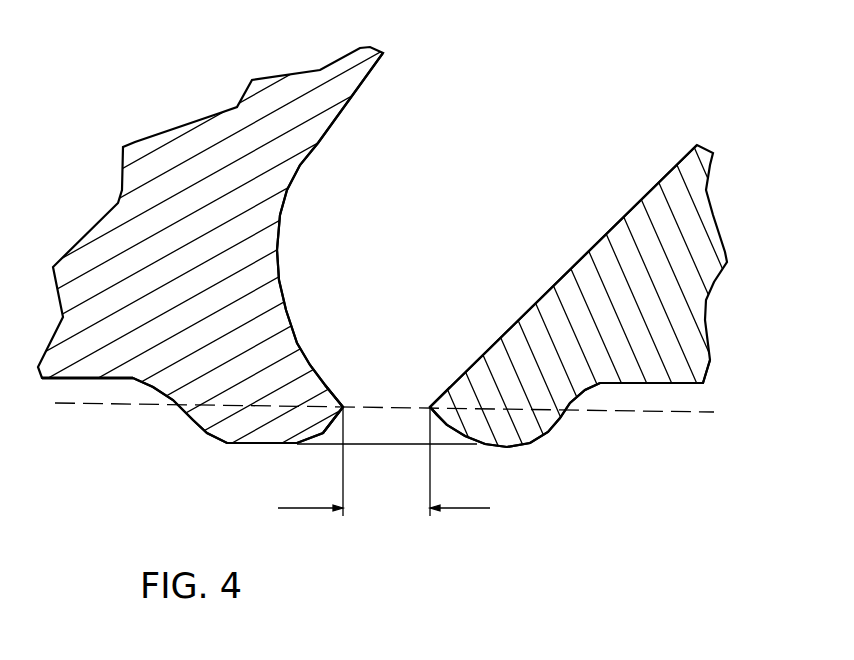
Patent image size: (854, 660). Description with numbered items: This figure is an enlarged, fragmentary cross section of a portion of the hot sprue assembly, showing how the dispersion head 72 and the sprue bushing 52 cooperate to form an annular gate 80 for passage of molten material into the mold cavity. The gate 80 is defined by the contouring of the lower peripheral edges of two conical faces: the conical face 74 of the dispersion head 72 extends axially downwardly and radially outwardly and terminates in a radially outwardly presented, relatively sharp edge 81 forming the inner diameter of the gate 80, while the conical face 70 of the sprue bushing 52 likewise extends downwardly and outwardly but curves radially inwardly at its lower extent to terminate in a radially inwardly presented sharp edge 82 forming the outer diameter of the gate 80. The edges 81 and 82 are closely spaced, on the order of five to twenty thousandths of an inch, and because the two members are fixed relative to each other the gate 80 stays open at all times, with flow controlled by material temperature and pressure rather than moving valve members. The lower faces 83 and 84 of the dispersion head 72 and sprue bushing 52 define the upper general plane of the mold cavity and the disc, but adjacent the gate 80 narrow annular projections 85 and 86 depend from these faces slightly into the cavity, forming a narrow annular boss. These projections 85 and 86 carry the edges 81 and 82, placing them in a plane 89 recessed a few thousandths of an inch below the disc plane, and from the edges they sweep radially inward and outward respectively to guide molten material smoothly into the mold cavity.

The sprue bushing 52 is at (158, 152).
The conical face 70 is at (322, 143).
The dispersion head 72 is at (658, 204).
The conical face 74 is at (578, 260).
The gate 80 is at (380, 396).
The edge 81 is at (430, 405).
The edge 82 is at (343, 405).
The lower face 83 is at (677, 385).
The lower face 84 is at (78, 380).
The annular projection 85 is at (508, 435).
The annular projection 86 is at (250, 435).
The plane 89 is at (657, 412).